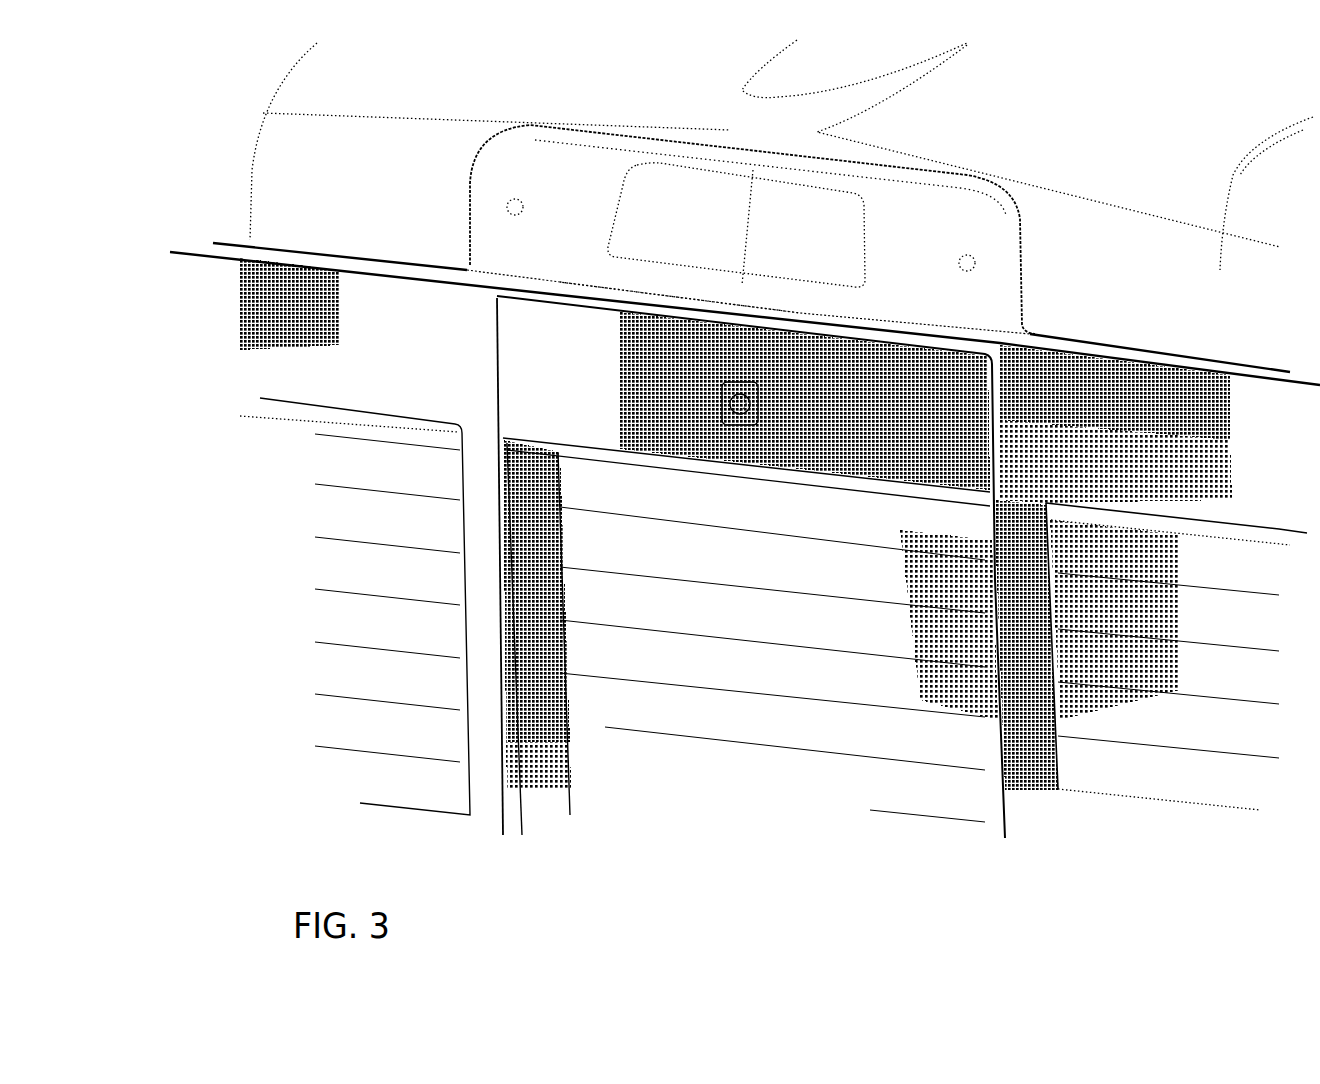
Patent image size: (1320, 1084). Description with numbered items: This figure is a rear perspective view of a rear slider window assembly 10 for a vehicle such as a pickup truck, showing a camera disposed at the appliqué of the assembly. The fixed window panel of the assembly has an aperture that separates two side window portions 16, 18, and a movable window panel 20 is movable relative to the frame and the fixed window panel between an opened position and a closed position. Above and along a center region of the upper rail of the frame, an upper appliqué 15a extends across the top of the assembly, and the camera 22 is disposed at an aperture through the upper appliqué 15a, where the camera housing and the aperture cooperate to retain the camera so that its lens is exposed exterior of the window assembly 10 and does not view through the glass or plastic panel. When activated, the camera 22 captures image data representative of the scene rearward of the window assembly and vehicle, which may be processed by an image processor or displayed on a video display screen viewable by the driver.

The rear slider window assembly 10 is at (152, 336).
The upper appliqué 15a is at (873, 393).
The side window portion 16 is at (250, 540).
The side window portion 18 is at (1181, 833).
The movable window panel 20 is at (798, 778).
The camera 22 is at (733, 407).